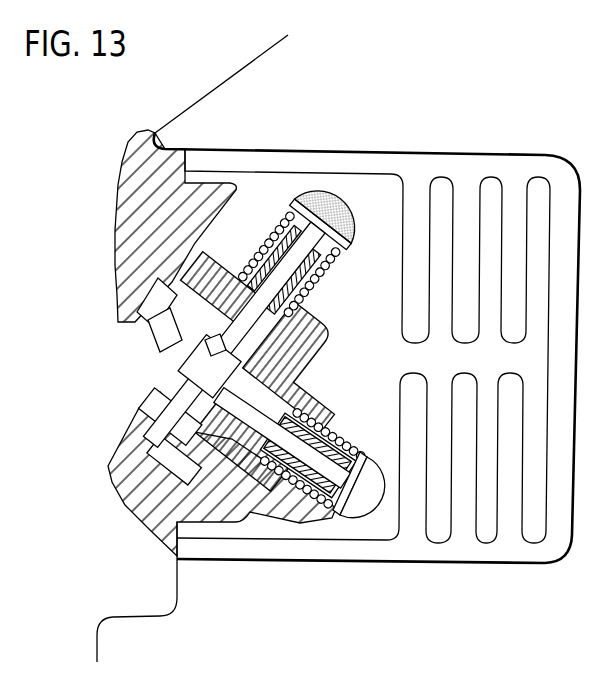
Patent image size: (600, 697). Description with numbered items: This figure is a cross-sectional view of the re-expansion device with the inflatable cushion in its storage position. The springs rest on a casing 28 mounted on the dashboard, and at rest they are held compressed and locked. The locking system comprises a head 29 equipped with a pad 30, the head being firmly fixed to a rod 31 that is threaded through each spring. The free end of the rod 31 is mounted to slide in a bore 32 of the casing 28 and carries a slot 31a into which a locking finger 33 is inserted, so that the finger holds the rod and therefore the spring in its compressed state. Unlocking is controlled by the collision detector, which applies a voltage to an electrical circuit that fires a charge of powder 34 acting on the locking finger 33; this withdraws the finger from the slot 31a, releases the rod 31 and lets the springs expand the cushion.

The casing 28 is at (224, 287).
The head 29 is at (293, 213).
The pad 30 is at (348, 212).
The rod 31 is at (300, 252).
The slot 31a is at (218, 365).
The bore 32 is at (268, 332).
The locking finger 33 is at (195, 345).
The charge of powder 34 is at (150, 322).